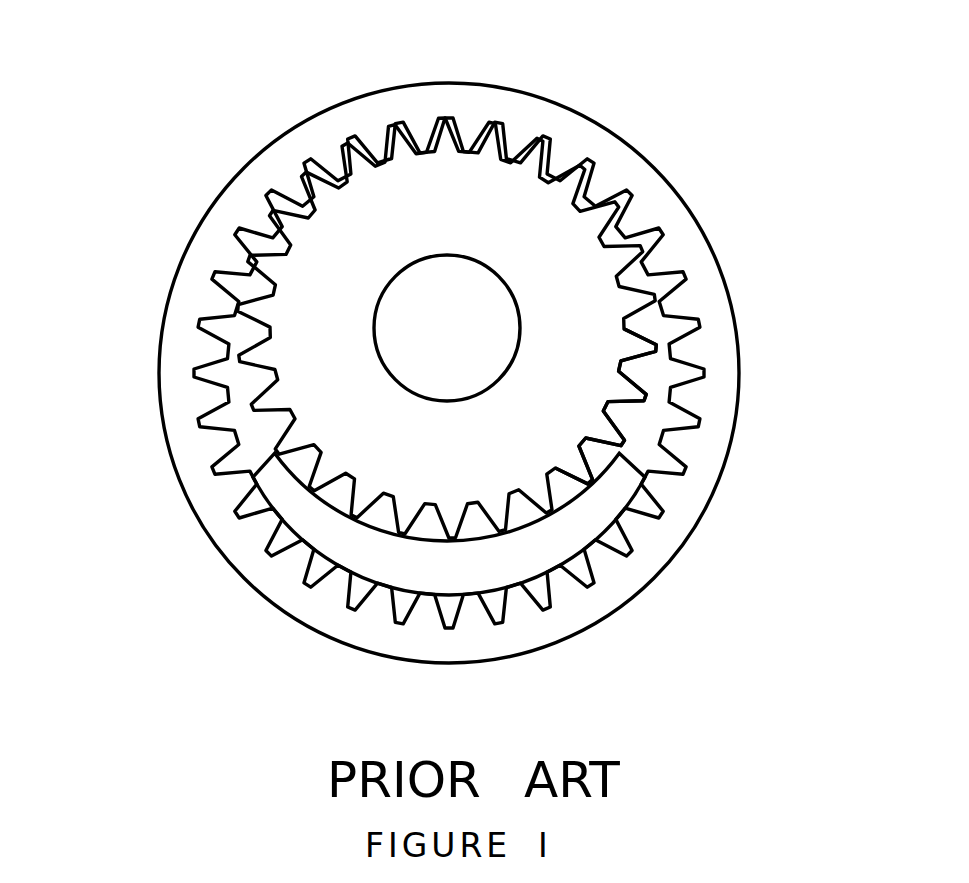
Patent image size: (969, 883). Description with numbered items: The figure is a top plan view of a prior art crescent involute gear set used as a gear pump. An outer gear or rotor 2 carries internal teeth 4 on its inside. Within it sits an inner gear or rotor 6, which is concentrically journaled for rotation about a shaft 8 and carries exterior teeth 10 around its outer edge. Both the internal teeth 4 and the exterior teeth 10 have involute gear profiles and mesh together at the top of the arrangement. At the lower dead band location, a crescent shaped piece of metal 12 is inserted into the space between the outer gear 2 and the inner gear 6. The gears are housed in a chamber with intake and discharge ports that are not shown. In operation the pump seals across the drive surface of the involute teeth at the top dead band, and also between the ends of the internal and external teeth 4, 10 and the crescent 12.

The outer gear or rotor 2 is at (571, 148).
The internal teeth 4 is at (223, 306).
The inner gear or rotor 6 is at (307, 380).
The shaft 8 is at (483, 319).
The exterior teeth 10 is at (637, 351).
The crescent shaped piece of metal 12 is at (597, 509).